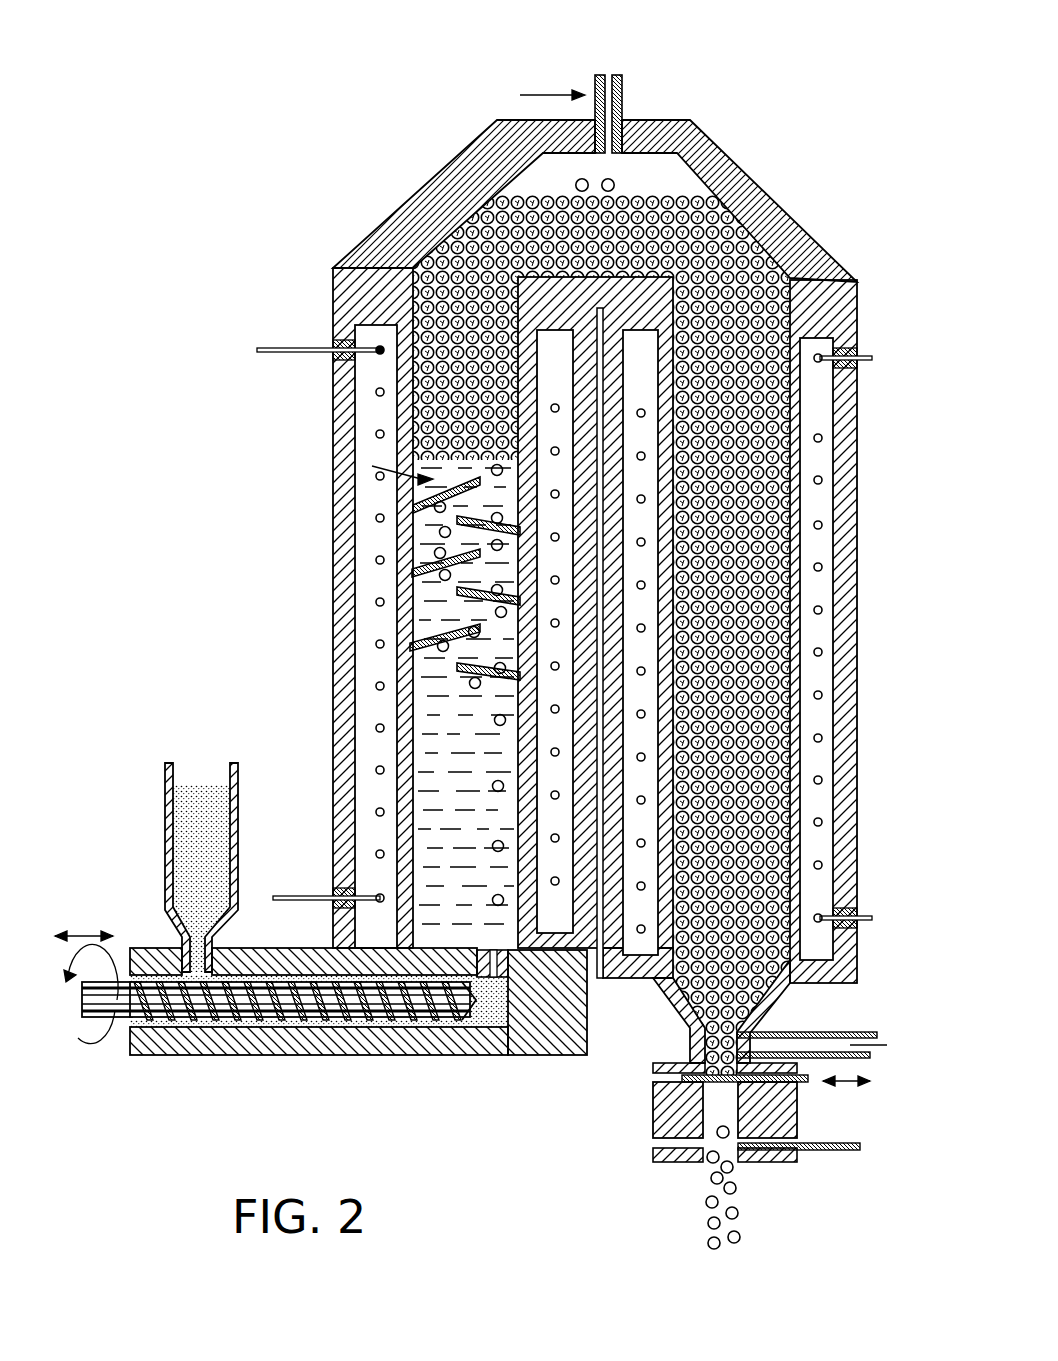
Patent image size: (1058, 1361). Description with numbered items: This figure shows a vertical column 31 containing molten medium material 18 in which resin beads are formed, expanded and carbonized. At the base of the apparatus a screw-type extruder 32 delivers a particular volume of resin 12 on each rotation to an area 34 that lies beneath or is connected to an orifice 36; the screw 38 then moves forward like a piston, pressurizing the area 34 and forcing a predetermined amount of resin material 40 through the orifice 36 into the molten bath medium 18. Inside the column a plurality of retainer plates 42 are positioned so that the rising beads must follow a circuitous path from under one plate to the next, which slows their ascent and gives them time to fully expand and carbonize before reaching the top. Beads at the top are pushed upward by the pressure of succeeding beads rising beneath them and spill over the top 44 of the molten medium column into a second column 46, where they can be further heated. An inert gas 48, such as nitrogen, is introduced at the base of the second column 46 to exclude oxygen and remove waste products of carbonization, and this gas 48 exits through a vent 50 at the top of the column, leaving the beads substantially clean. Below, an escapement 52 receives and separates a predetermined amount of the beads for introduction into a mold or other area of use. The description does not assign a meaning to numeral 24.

The resin 12 is at (212, 793).
The molten medium material 18 is at (425, 697).
The cooling passages 24 is at (376, 434).
The vertical column 31 is at (375, 484).
The screw-type extruder 32 is at (168, 1056).
The area 34 is at (520, 1058).
The orifice 36 is at (470, 1015).
The screw 38 is at (95, 1005).
The resin material 40 is at (494, 950).
The retainer plates 42 is at (480, 562).
The top 44 is at (423, 263).
The second column 46 is at (745, 363).
The gas 48 is at (829, 1091).
The vent 50 is at (613, 72).
The escapement 52 is at (650, 1110).